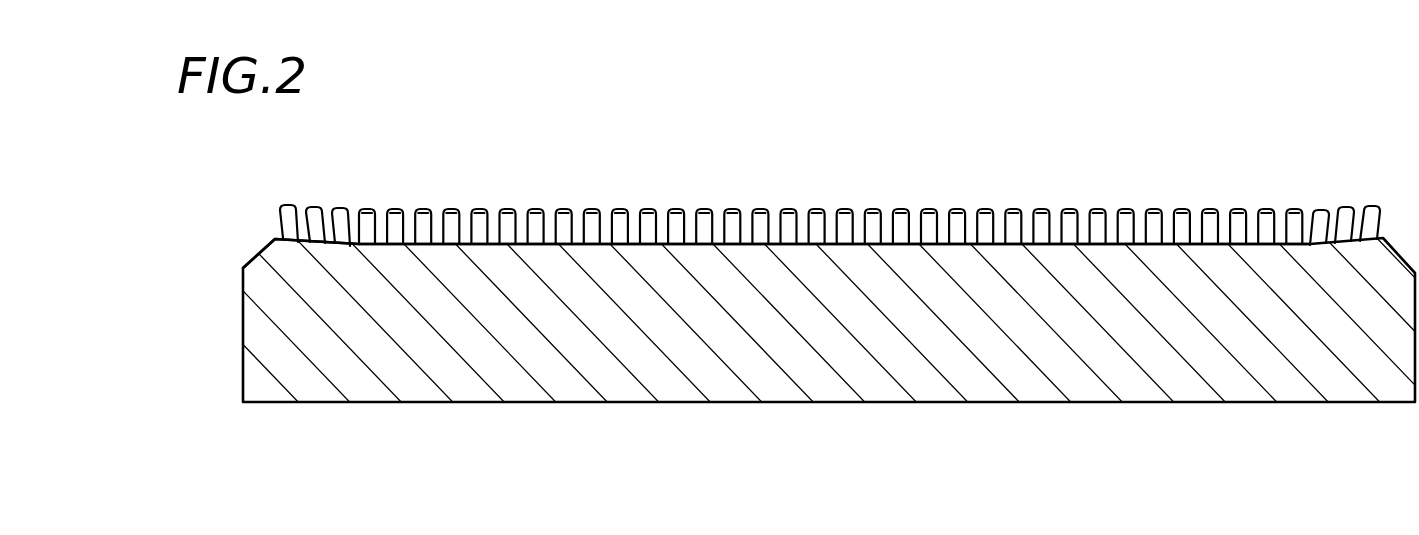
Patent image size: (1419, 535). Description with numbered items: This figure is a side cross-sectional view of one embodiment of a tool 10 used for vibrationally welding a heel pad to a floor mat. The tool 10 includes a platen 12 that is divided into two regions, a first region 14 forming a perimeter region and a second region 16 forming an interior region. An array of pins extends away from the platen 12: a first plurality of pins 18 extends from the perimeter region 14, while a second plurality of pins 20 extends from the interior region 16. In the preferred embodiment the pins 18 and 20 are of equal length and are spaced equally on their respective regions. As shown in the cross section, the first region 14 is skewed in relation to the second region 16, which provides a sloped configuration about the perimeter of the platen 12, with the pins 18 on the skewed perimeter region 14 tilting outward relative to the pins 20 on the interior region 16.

The tool 10 is at (265, 432).
The platen 12 is at (1054, 241).
The first region 14 is at (318, 245).
The second region 16 is at (830, 247).
The first plurality of pins 18 is at (345, 195).
The second plurality of pins 20 is at (589, 205).